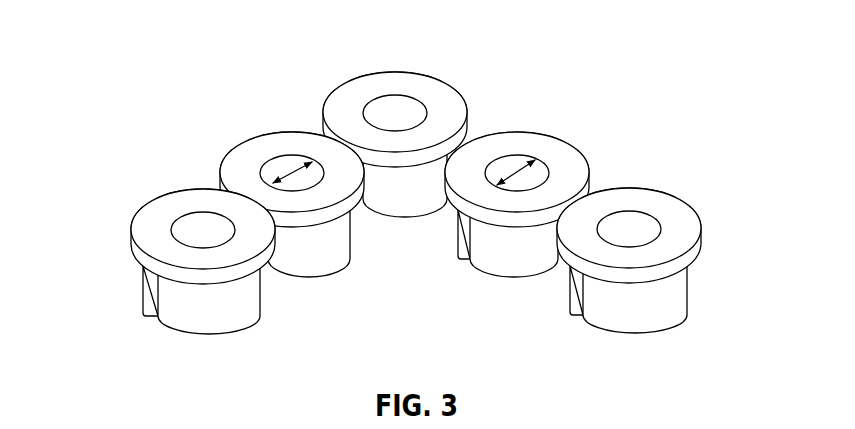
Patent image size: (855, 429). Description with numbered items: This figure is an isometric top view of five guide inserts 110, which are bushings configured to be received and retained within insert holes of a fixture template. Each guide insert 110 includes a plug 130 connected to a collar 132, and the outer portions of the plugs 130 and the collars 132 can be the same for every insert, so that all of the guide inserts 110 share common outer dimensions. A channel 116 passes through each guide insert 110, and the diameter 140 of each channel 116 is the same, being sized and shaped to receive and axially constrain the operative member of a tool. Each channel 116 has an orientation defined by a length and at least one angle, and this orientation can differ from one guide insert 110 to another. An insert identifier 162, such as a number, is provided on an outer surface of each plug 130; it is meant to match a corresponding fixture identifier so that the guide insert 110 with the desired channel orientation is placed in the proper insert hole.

The guide insert 110 is at (421, 203).
The channel 116 is at (198, 225).
The plug 130 is at (202, 320).
The collar 132 is at (153, 220).
The diameter 140 is at (293, 170).
The insert identifier 162 is at (233, 307).